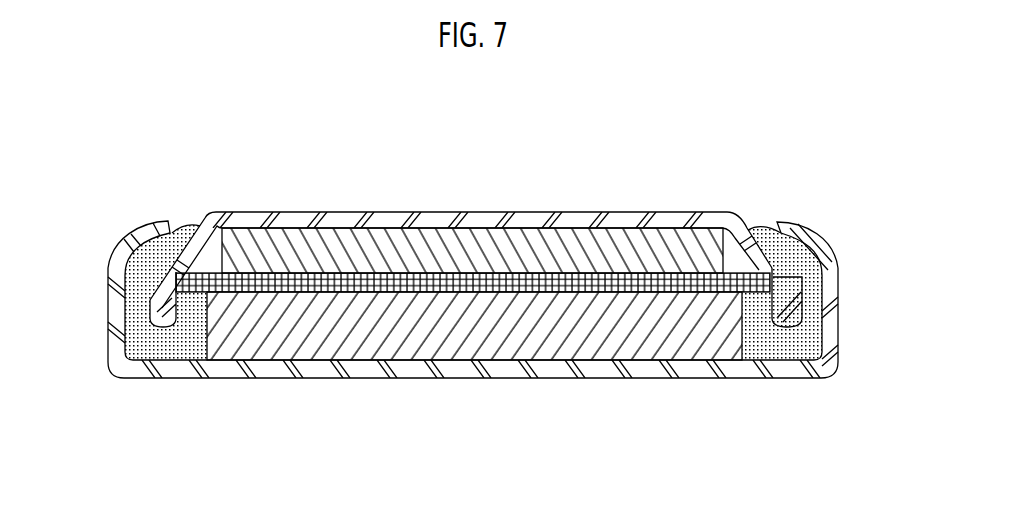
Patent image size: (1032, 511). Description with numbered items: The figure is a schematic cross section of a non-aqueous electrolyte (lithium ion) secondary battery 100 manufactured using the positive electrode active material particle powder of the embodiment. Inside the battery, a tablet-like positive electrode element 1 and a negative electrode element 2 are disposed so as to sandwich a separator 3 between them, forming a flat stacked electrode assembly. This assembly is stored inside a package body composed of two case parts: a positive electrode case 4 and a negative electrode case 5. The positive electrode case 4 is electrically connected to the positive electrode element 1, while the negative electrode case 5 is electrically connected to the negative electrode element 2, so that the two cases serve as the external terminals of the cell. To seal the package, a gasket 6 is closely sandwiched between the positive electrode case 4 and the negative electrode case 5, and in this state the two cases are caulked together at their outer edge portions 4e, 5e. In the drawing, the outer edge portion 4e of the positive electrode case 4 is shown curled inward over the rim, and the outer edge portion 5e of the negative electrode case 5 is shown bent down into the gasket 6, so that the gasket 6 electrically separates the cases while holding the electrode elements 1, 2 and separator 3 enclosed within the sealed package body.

The lithium ion secondary battery 100 is at (698, 170).
The positive electrode element 1 is at (502, 343).
The negative electrode element 2 is at (510, 247).
The separator 3 is at (402, 287).
The positive electrode case 4 is at (594, 365).
The outer edge portion of positive electrode case 4e is at (114, 237).
The negative electrode case 5 is at (402, 220).
The outer edge portion of negative electrode case 5e is at (141, 305).
The gasket 6 is at (165, 347).